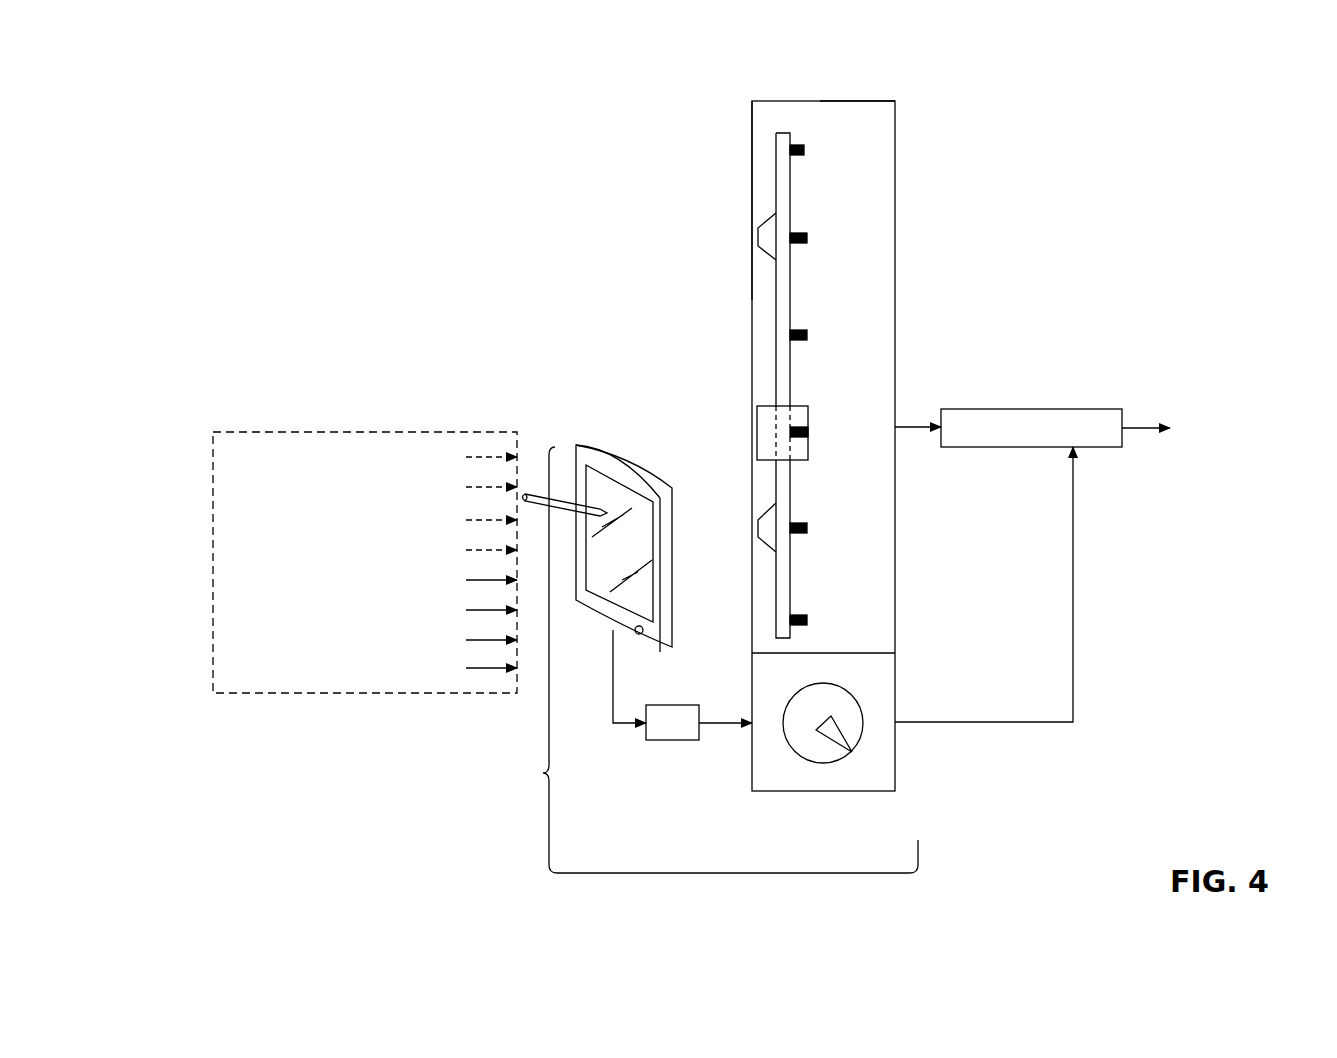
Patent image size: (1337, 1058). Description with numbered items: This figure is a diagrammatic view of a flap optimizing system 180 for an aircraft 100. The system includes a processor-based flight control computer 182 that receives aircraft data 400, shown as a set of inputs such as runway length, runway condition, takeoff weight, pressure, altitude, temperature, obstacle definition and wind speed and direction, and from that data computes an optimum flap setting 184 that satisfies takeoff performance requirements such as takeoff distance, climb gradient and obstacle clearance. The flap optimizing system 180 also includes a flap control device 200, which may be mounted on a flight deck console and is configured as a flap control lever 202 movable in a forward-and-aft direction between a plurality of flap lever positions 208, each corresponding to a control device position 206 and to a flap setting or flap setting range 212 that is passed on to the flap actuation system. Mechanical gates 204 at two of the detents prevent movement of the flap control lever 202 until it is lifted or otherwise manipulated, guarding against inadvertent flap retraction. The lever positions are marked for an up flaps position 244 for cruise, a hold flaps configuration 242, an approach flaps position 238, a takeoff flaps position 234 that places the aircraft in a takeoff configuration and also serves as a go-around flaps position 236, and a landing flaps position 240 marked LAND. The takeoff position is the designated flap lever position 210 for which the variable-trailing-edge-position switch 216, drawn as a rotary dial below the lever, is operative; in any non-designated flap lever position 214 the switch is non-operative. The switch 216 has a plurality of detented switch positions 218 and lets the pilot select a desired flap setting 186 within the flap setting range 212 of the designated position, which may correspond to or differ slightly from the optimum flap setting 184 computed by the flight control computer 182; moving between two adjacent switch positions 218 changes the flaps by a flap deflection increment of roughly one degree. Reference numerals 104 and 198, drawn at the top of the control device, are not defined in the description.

The aircraft 100 is at (822, 101).
The flap control housing 104 is at (763, 101).
The control panel 198 is at (880, 101).
The flap control device 200 is at (766, 406).
The flap control lever 202 is at (773, 406).
The mechanical gate 204 is at (758, 237).
The control device positions 206 is at (790, 438).
The flap lever positions 208 is at (790, 150).
The designated flap lever position 210 is at (790, 431).
The flap setting range 212 is at (1038, 409).
The non-designated flap lever position 214 is at (788, 235).
The variable-trailing-edge-position switch 216 is at (864, 736).
The switch positions 218 is at (828, 790).
The takeoff flaps position 234 is at (870, 398).
The go-around flaps position 236 is at (868, 458).
The approach flaps position 238 is at (850, 318).
The landing flaps position 240 is at (855, 600).
The hold flaps configuration 242 is at (850, 224).
The up flaps position 244 is at (850, 139).
The flap optimizing system 180 is at (708, 660).
The flight control computer 182 is at (607, 455).
The optimum flap setting 184 is at (672, 742).
The desired flap setting 186 is at (878, 772).
The aircraft data 400 is at (372, 432).